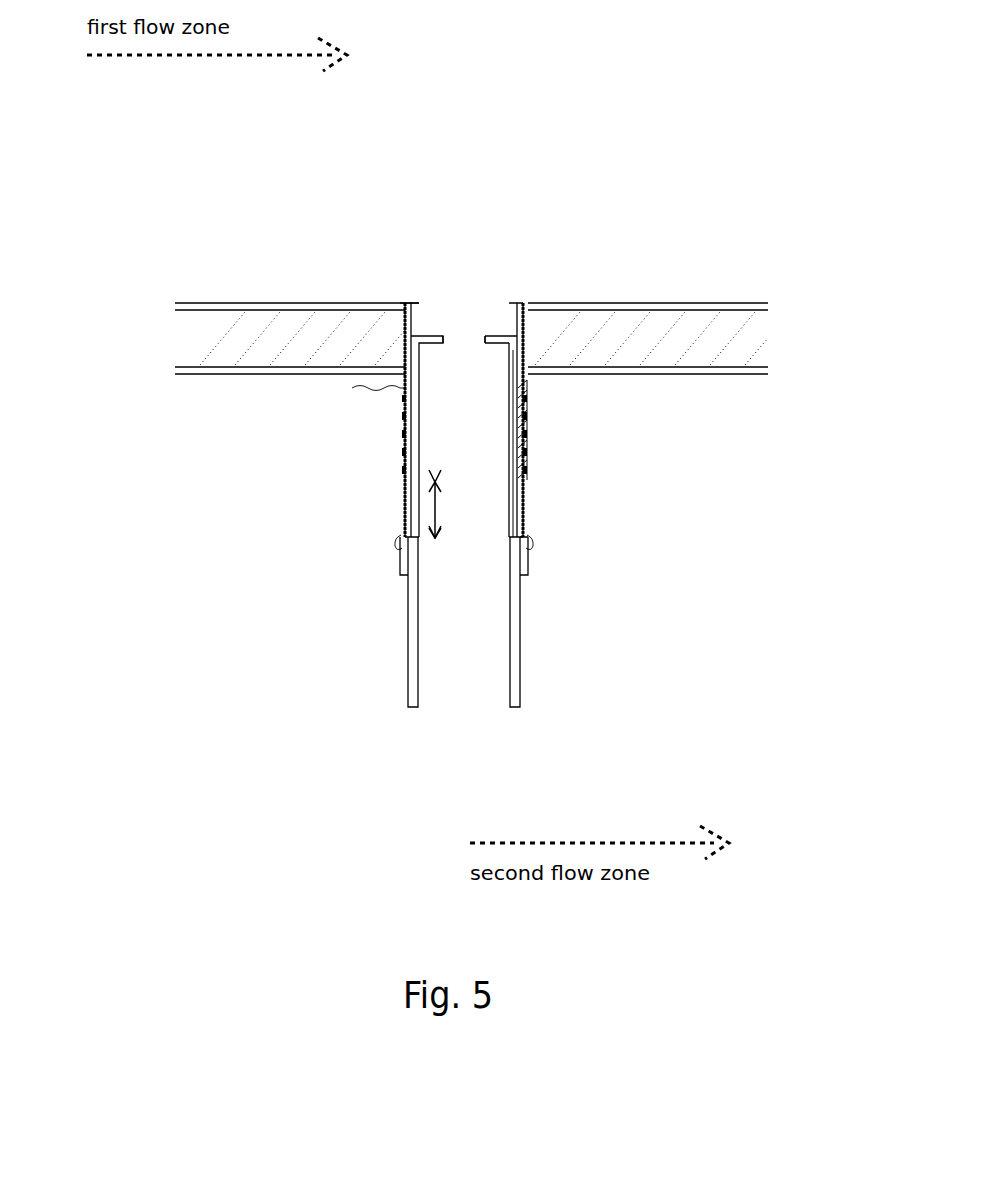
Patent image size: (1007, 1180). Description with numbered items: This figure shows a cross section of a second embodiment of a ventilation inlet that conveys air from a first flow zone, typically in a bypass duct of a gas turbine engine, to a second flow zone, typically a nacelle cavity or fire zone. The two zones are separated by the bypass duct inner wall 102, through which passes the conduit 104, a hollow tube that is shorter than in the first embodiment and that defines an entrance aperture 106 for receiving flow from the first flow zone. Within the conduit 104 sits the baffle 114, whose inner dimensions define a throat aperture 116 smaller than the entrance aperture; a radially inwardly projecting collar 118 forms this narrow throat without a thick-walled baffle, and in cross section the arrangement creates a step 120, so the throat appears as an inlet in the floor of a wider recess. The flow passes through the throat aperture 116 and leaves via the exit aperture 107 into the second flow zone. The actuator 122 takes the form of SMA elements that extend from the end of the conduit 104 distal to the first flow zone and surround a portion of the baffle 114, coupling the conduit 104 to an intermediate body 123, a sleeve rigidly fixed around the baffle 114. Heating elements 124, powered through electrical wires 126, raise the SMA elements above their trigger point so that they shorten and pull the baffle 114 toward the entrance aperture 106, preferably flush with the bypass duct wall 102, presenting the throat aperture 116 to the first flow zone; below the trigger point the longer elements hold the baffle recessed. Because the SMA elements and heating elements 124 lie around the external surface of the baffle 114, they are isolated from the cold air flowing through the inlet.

The bypass duct inner wall 102 is at (243, 342).
The conduit 104 is at (403, 343).
The entrance aperture 106 is at (425, 302).
The exit aperture 107 is at (447, 703).
The baffle 114 is at (517, 495).
The throat aperture 116 is at (470, 334).
The collar 118 is at (497, 334).
The step 120 is at (510, 330).
The actuator 122 is at (529, 443).
The intermediate body 123 is at (527, 567).
The heating element 124 is at (398, 477).
The electrical wires 126 is at (352, 388).